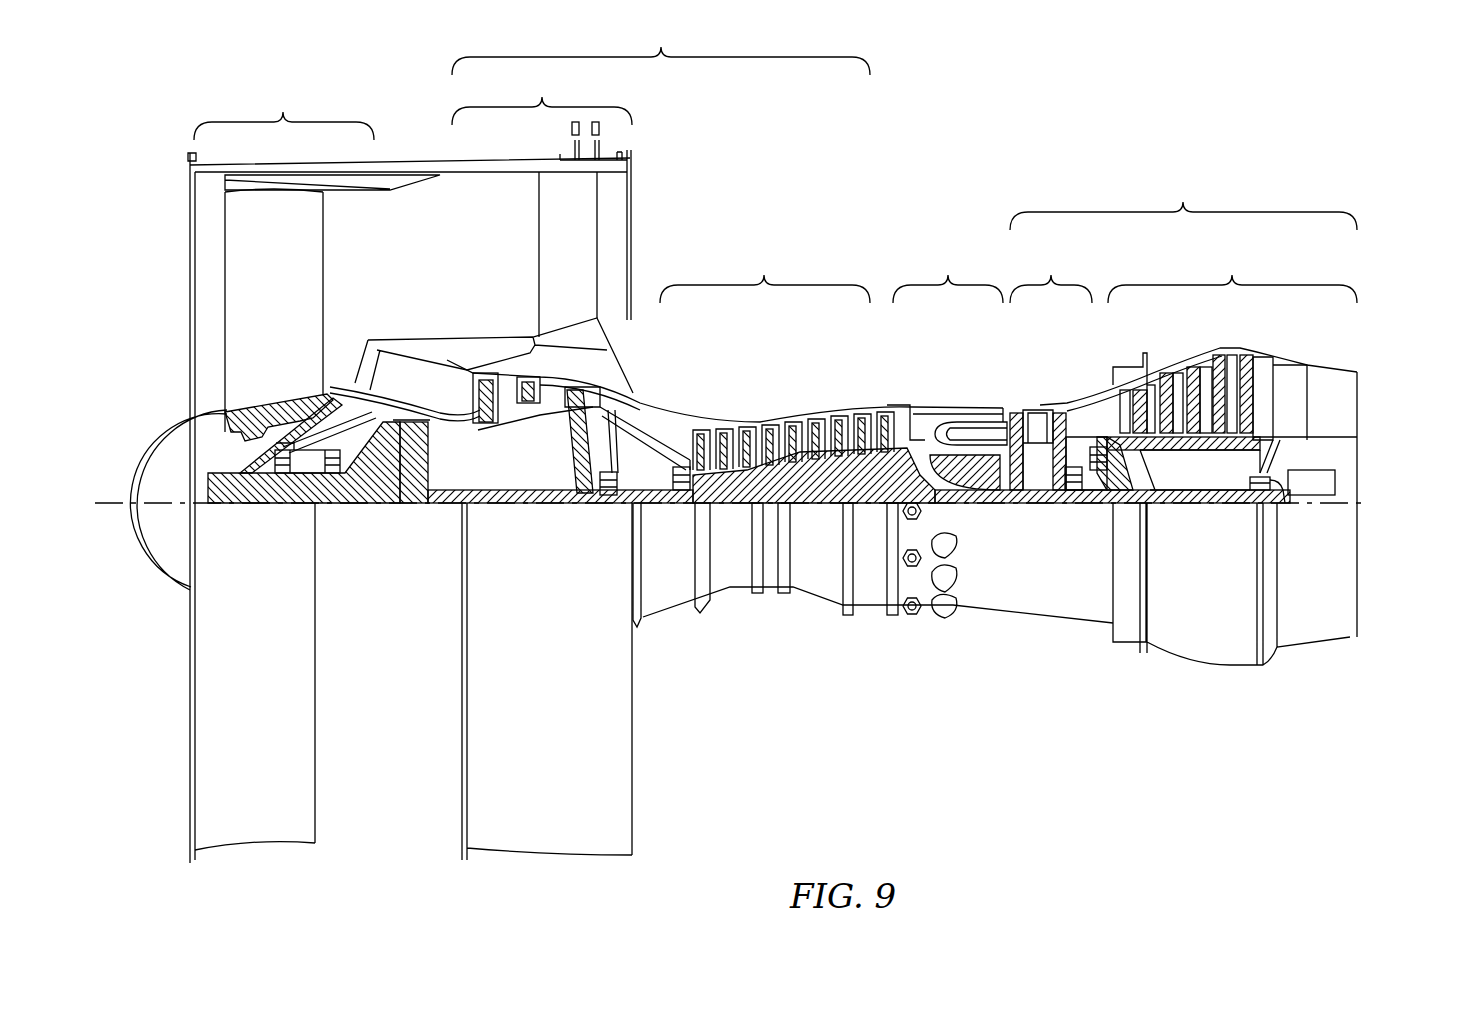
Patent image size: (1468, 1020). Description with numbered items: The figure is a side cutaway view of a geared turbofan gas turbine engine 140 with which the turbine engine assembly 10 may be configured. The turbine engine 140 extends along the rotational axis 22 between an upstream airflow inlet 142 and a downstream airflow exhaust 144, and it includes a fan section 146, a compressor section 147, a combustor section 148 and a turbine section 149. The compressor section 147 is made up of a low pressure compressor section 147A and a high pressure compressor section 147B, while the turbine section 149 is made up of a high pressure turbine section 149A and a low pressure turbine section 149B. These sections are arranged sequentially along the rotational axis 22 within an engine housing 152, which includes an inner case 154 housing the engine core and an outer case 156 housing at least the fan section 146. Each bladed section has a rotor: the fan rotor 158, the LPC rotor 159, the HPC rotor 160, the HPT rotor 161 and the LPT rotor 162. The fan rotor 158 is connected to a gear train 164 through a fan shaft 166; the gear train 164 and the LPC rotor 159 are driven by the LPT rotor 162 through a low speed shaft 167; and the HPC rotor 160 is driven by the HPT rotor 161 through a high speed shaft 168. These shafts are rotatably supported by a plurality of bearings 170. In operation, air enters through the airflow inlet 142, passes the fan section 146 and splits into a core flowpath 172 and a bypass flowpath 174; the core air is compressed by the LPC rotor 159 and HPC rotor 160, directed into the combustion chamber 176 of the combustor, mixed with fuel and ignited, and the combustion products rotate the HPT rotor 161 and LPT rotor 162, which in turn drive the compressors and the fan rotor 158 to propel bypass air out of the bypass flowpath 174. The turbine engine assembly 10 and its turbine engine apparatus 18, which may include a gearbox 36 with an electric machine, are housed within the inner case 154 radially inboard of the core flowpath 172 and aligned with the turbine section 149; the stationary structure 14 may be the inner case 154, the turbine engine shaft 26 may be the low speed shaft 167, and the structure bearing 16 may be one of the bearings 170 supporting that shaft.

The turbine engine assembly 10 is at (1377, 433).
The stationary structure 14 is at (878, 598).
The inner case 154 is at (867, 612).
The rotating structure bearing 16 is at (1285, 498).
The turbine engine apparatus 18 is at (1377, 463).
The gearbox 36 is at (1340, 458).
The rotational axis 22 is at (103, 510).
The turbine engine shaft 26 is at (1203, 523).
The low speed shaft 167 is at (1228, 505).
The geared turbofan gas turbine engine 140 is at (150, 140).
The airflow inlet 142 is at (190, 240).
The airflow exhaust 144 is at (1357, 400).
The fan section 146 is at (284, 110).
The compressor section 147 is at (661, 44).
The low pressure compressor section 147A is at (542, 94).
The high pressure compressor section 147B is at (765, 273).
The combustor section 148 is at (948, 274).
The turbine section 149 is at (1183, 198).
The high pressure turbine section 149A is at (1051, 274).
The low pressure turbine section 149B is at (1232, 274).
The engine housing 152 is at (662, 636).
The outer case 156 is at (632, 855).
The fan rotor 158 is at (223, 425).
The LPC rotor 159 is at (565, 470).
The HPC rotor 160 is at (810, 465).
The HPT rotor 161 is at (1025, 495).
The LPT rotor 162 is at (1160, 452).
The gear train 164 is at (413, 497).
The fan shaft 166 is at (250, 505).
The high speed shaft 168 is at (972, 490).
The bearings 170 is at (300, 476).
The core flowpath 172 is at (657, 420).
The bypass flowpath 174 is at (462, 273).
The combustion chamber 176 is at (960, 430).